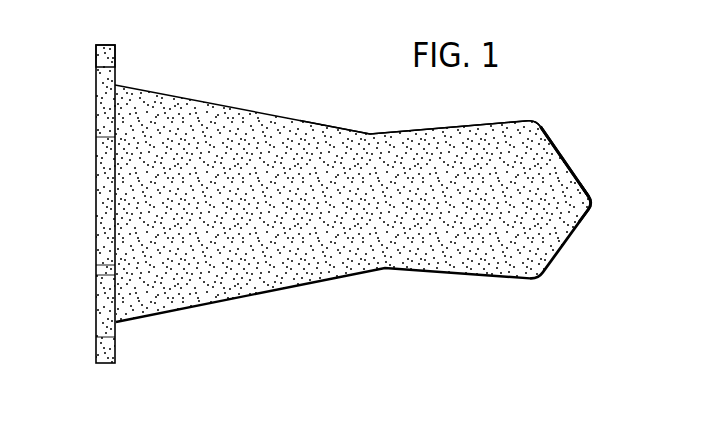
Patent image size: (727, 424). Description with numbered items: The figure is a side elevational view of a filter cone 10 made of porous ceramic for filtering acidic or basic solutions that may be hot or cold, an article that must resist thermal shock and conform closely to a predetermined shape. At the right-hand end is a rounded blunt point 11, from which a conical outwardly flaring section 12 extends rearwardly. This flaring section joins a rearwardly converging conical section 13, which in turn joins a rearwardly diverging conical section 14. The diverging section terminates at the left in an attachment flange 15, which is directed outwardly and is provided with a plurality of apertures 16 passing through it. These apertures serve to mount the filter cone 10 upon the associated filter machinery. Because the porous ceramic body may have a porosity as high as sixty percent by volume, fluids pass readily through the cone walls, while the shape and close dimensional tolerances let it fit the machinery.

The filter cone 10 is at (228, 102).
The rounded blunt point 11 is at (594, 204).
The conical outwardly flaring section 12 is at (566, 163).
The rearwardly converging conical section 13 is at (457, 125).
The rearwardly diverging conical section 14 is at (333, 125).
The attachment flange 15 is at (108, 110).
The apertures 16 is at (97, 67).